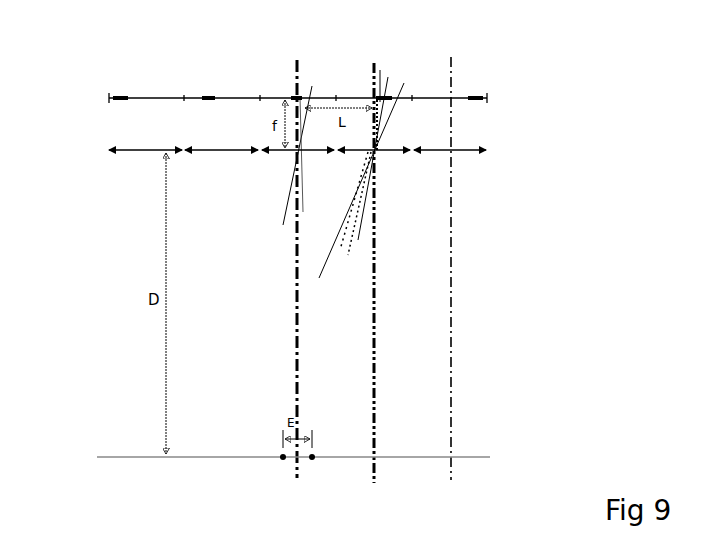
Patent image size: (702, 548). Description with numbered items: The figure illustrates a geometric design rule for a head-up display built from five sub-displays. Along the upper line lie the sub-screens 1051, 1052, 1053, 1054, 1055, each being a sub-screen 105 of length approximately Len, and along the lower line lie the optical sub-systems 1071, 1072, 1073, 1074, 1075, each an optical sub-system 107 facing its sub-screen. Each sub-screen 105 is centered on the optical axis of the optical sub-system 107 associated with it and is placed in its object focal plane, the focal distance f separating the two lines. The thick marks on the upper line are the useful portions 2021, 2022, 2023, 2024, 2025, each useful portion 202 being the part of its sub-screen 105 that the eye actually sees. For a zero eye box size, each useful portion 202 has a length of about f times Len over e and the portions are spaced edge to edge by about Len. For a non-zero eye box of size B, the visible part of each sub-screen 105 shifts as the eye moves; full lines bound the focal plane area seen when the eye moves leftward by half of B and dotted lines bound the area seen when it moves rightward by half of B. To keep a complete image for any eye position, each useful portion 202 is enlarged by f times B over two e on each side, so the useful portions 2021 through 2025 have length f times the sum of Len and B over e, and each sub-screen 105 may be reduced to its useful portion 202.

The sub-screen 105 is at (261, 68).
The first sub-screen 1051 is at (133, 99).
The second sub-screen 1052 is at (195, 97).
The third sub-screen 1053 is at (284, 97).
The fourth sub-screen 1054 is at (361, 98).
The fifth sub-screen 1055 is at (435, 98).
The useful portion 202 is at (298, 63).
The first useful portion 2021 is at (115, 96).
The second useful portion 2022 is at (209, 96).
The third useful portion 2023 is at (305, 96).
The fourth useful portion 2024 is at (392, 97).
The fifth useful portion 2025 is at (470, 96).
The optical sub-system 107 is at (299, 172).
The first optical sub-system 1071 is at (137, 153).
The second optical sub-system 1072 is at (207, 153).
The third optical sub-system 1073 is at (278, 153).
The fourth optical sub-system 1074 is at (385, 153).
The fifth optical sub-system 1075 is at (470, 153).